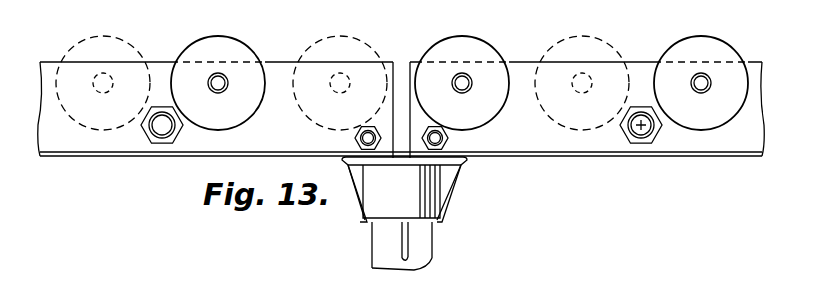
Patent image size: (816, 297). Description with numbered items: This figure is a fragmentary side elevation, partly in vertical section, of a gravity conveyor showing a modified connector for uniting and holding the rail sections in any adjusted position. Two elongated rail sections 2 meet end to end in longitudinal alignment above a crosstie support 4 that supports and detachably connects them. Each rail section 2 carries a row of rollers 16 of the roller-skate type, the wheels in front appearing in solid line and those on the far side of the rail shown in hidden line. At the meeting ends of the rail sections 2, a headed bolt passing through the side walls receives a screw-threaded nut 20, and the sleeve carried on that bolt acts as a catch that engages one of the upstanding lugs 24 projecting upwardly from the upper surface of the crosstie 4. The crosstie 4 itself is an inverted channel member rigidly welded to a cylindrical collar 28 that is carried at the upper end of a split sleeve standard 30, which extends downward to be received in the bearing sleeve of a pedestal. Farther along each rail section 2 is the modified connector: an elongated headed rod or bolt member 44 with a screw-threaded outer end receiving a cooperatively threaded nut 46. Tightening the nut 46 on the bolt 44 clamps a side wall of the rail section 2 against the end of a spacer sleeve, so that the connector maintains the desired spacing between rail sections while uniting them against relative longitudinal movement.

The rail section 2 is at (290, 56).
The roller 16 is at (200, 47).
The nut 46 is at (167, 145).
The headed rod or bolt member 44 is at (641, 119).
The nut 20 is at (376, 129).
The lug 24 is at (355, 137).
The crosstie support 4 is at (470, 193).
The cylindrical collar 28 is at (377, 197).
The split sleeve standard 30 is at (428, 235).